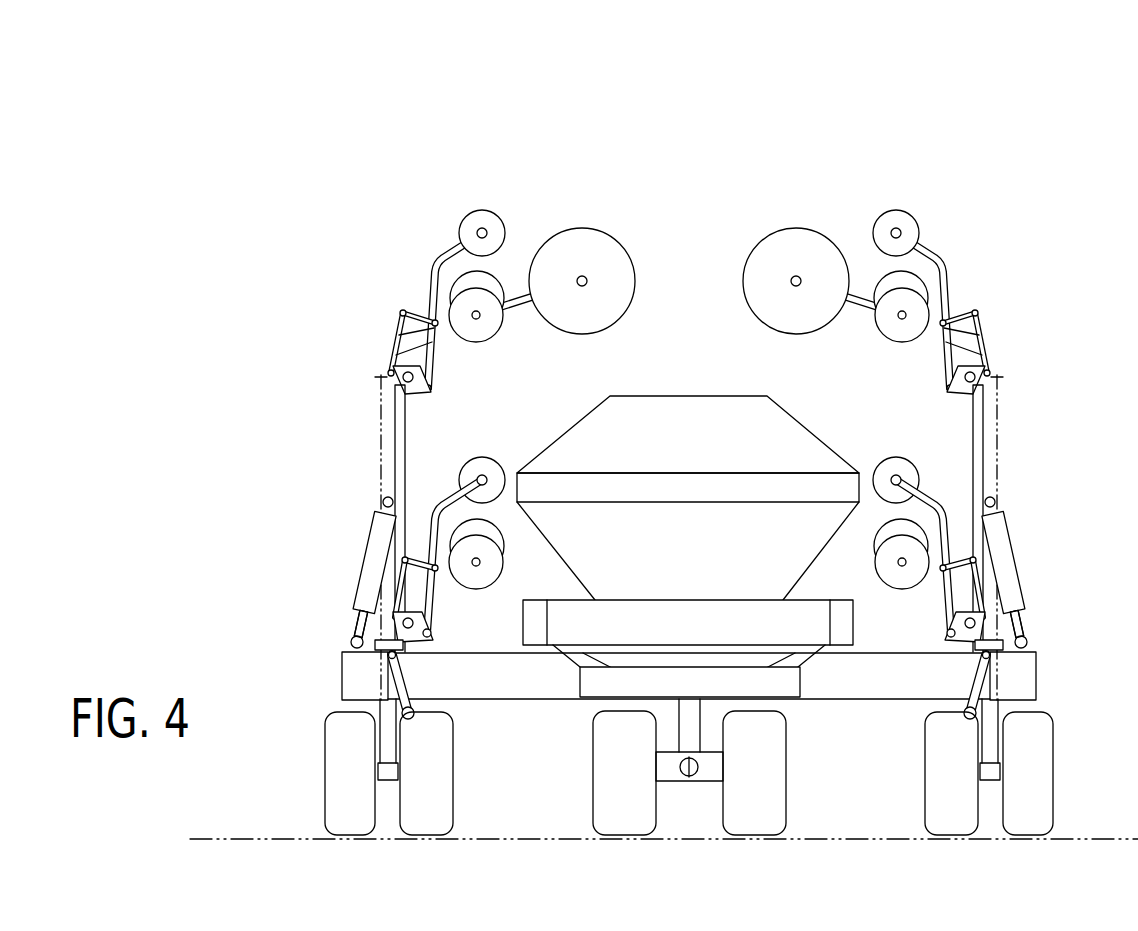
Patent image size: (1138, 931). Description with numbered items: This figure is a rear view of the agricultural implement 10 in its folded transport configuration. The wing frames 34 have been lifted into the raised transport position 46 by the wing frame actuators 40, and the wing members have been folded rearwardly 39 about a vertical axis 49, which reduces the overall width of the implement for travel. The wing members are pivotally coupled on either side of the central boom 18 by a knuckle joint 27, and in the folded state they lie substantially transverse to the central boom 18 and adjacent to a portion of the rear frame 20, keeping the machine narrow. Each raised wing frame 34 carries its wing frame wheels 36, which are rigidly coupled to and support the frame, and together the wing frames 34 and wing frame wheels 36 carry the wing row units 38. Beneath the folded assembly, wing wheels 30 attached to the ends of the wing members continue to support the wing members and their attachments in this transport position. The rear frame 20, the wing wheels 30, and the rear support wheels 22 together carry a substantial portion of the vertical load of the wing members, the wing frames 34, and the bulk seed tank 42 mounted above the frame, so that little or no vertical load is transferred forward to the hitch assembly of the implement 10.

The agricultural implement 10 is at (540, 118).
The central boom 18 is at (338, 665).
The rear frame 20 is at (567, 627).
The rear support wheels 22 is at (627, 825).
The knuckle joint 27 is at (372, 678).
The wing wheels 30 is at (335, 825).
The wing frames 34 is at (392, 447).
The wing frame wheels 36 is at (745, 262).
The wing row units 38 is at (445, 198).
The rearward fold 39 is at (362, 508).
The wing frame actuators 40 is at (356, 626).
The bulk seed tank 42 is at (777, 408).
The transport position 46 is at (415, 258).
The vertical axis 49 is at (378, 385).